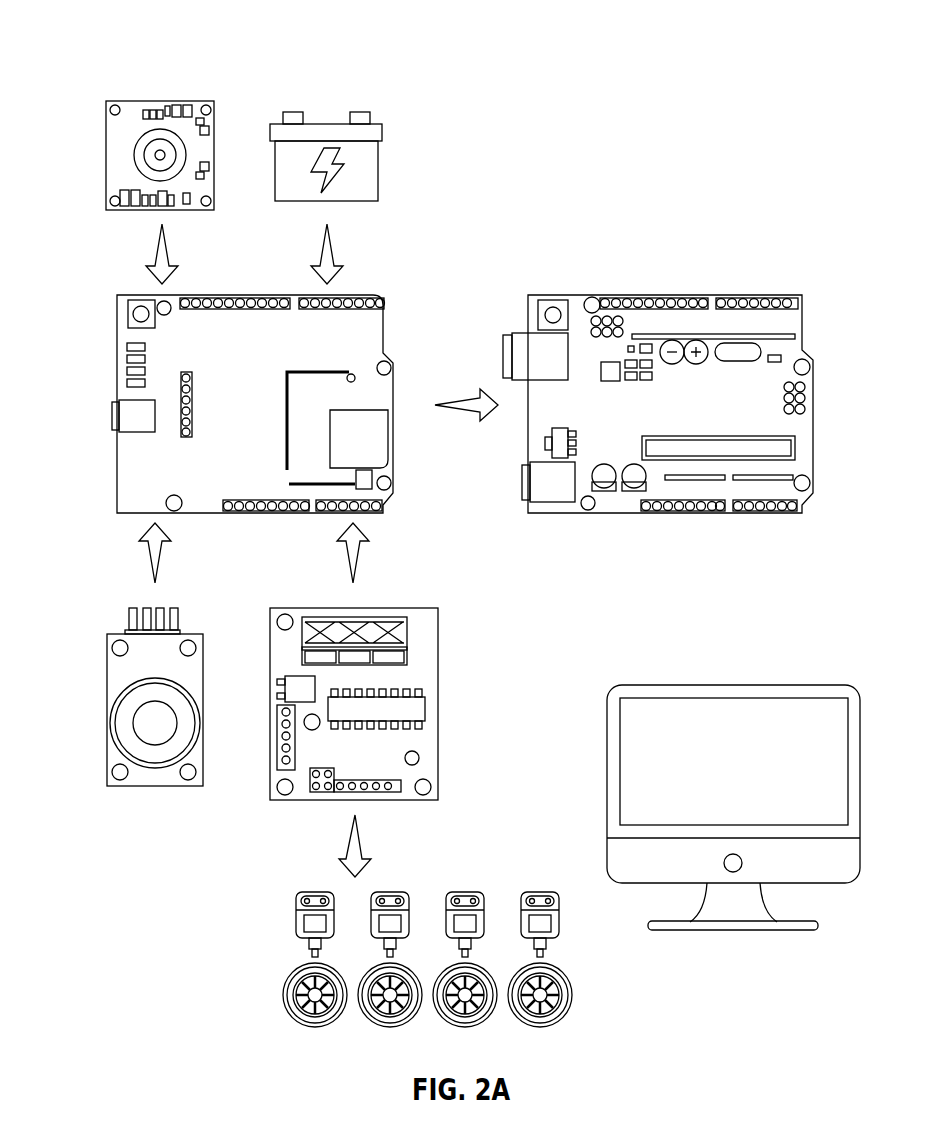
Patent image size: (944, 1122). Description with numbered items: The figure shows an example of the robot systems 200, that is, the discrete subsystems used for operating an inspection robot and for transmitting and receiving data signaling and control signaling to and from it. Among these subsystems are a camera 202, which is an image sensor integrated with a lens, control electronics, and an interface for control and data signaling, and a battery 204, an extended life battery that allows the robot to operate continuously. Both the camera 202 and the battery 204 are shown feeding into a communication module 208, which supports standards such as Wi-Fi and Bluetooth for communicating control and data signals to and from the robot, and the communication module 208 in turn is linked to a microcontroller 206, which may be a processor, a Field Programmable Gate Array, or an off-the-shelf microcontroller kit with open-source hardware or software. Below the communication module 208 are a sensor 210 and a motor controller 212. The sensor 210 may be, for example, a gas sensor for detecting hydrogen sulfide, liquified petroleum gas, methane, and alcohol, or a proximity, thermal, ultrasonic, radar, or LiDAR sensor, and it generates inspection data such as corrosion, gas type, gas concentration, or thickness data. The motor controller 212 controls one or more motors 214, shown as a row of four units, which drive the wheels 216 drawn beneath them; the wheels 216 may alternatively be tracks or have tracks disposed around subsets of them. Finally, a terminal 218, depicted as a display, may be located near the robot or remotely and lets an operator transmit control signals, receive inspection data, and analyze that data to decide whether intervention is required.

The robot systems 200 is at (124, 36).
The camera 202 is at (163, 101).
The battery 204 is at (326, 124).
The microcontroller 206 is at (528, 435).
The communication module 208 is at (117, 470).
The sensor 210 is at (133, 787).
The motor controller 212 is at (372, 608).
The motors 214 is at (282, 928).
The wheels 216 is at (282, 984).
The terminal 218 is at (607, 758).